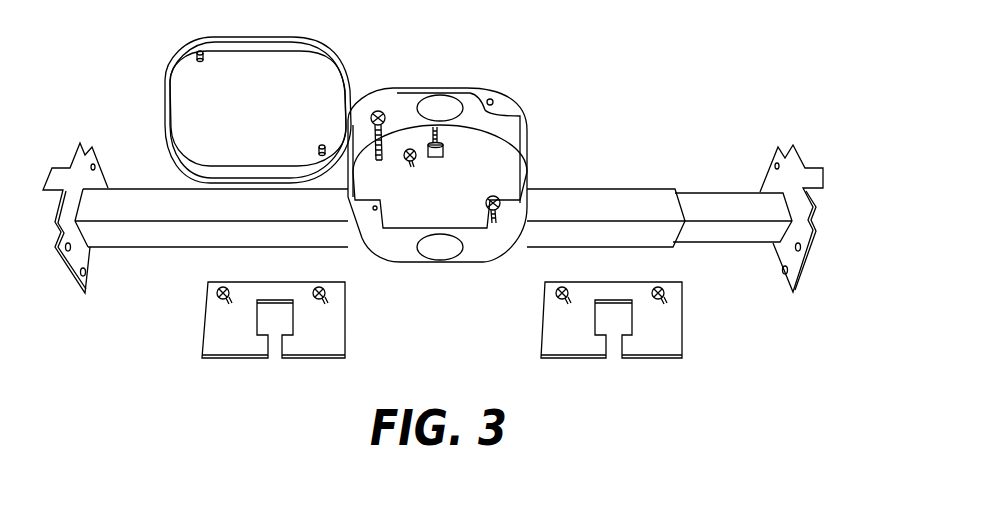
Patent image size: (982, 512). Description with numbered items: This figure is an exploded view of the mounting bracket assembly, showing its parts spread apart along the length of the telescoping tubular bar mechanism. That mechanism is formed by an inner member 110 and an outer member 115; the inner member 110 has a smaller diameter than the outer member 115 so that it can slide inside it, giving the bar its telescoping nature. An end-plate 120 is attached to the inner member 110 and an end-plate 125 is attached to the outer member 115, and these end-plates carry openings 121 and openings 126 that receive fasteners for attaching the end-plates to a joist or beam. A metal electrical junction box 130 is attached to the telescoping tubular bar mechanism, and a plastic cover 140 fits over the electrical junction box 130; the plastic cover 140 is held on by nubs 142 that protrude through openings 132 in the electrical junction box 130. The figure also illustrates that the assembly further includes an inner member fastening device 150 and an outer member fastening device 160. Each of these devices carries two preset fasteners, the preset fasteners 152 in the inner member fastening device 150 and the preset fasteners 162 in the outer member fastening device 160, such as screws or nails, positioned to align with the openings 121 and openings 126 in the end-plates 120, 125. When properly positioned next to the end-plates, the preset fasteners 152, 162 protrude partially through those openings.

The inner member 110 is at (697, 192).
The outer member 115 is at (582, 188).
The end-plate 120 is at (815, 197).
The openings 121 is at (777, 163).
The end-plate 125 is at (73, 150).
The openings 126 is at (96, 166).
The electrical junction box 130 is at (453, 88).
The openings 132 is at (493, 99).
The plastic cover 140 is at (352, 63).
The nubs 142 is at (203, 60).
The inner member fastening device 150 is at (683, 318).
The preset fasteners 152 is at (560, 289).
The outer member fastening device 160 is at (348, 318).
The preset fasteners 162 is at (218, 289).